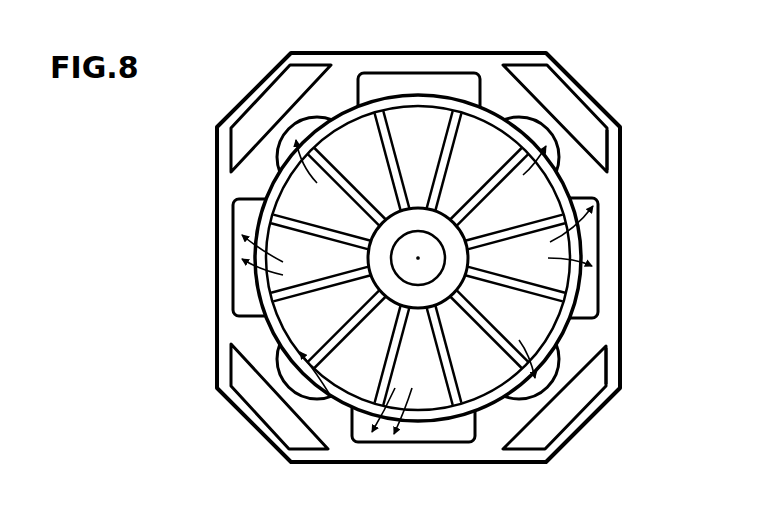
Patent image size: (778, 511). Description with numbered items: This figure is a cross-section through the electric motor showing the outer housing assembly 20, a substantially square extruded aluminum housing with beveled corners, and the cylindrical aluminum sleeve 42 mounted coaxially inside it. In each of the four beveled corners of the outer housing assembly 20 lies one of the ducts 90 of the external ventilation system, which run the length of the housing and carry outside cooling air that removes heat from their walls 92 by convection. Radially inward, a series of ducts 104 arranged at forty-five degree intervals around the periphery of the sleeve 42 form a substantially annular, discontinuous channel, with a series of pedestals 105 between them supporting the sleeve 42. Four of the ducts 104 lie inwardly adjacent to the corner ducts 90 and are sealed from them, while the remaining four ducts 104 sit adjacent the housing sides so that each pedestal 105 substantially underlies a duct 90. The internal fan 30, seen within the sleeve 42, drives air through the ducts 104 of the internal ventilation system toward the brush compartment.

The outer housing assembly 20 is at (476, 52).
The internal fan 30 is at (443, 170).
The sleeve 42 is at (272, 333).
The ducts 90 is at (581, 110).
The walls 92 is at (598, 133).
The ducts 104 is at (378, 73).
The pedestals 105 is at (342, 83).